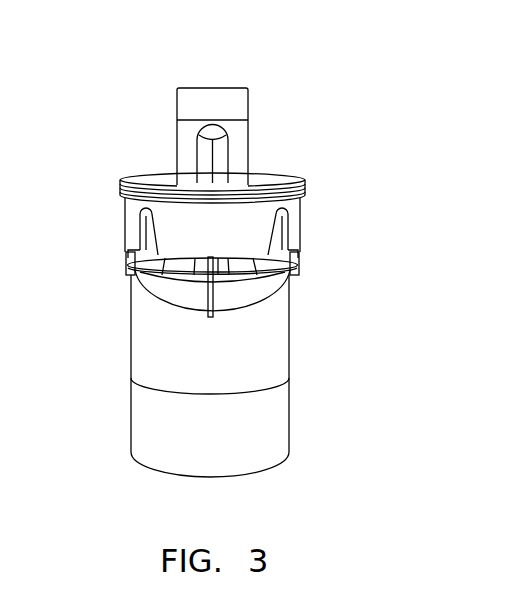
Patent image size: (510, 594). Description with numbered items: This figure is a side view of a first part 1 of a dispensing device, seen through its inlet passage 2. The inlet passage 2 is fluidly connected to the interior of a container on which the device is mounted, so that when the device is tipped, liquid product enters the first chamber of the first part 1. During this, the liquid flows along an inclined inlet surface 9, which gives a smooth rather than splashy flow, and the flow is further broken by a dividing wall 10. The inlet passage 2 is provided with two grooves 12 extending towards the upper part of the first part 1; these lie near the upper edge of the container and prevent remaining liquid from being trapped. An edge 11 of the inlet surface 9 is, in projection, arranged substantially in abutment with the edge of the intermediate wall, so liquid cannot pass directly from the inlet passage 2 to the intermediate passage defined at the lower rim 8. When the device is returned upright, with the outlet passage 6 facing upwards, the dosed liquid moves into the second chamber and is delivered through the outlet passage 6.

The first part 1 is at (430, 82).
The inlet passage 2 is at (223, 268).
The outlet passage 6 is at (218, 88).
The lower rim 8 is at (245, 475).
The inlet surface 9 is at (260, 287).
The dividing wall 10 is at (210, 292).
The edge of the inlet surface 11 is at (188, 273).
The grooves 12 is at (147, 227).